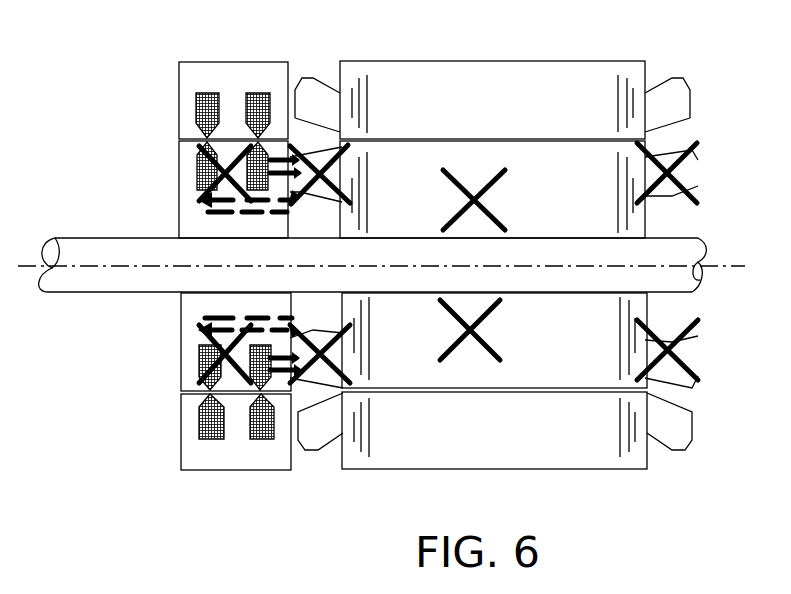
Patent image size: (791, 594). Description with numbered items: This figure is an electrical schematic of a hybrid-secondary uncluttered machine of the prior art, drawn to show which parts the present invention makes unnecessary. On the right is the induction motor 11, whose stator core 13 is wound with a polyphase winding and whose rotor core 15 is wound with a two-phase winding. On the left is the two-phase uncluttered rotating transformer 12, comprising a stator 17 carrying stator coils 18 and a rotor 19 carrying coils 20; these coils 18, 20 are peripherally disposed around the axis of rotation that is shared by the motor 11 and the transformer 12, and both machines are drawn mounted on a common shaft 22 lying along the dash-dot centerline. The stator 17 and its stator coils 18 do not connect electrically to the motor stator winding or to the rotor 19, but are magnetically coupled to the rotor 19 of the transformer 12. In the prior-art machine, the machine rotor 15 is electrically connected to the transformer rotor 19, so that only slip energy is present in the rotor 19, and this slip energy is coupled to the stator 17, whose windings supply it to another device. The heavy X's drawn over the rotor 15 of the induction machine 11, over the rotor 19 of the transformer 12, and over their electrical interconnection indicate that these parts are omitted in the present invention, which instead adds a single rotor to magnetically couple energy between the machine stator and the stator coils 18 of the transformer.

The induction motor 11 is at (464, 40).
The uncluttered transformer 12 is at (227, 45).
The stator core 13 is at (523, 122).
The rotor core 15 is at (576, 196).
The stator 17 is at (181, 103).
The stator coils 18 is at (197, 120).
The rotor 19 is at (180, 213).
The coils 20 is at (197, 172).
The shaft 22 is at (106, 238).